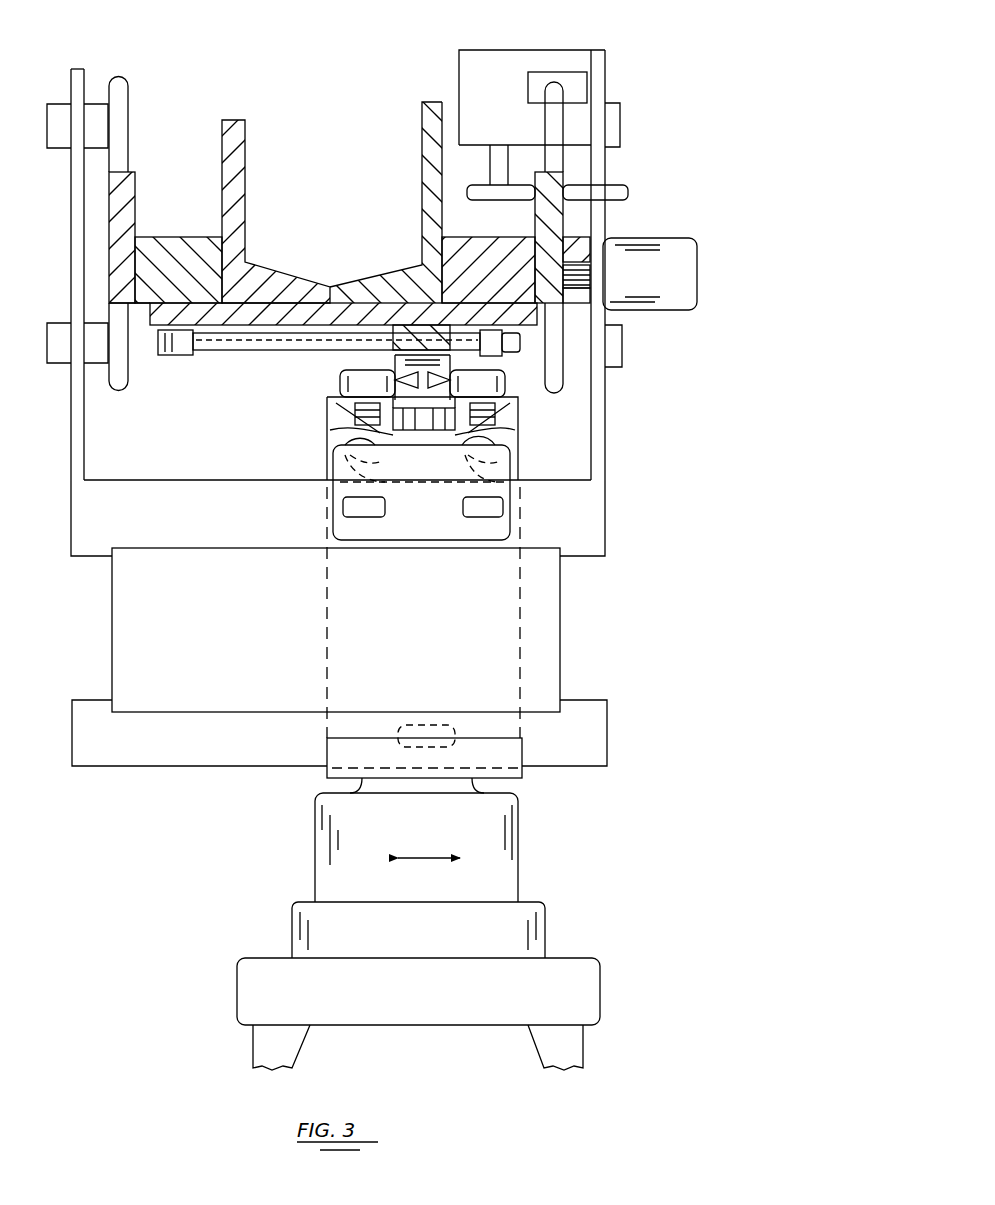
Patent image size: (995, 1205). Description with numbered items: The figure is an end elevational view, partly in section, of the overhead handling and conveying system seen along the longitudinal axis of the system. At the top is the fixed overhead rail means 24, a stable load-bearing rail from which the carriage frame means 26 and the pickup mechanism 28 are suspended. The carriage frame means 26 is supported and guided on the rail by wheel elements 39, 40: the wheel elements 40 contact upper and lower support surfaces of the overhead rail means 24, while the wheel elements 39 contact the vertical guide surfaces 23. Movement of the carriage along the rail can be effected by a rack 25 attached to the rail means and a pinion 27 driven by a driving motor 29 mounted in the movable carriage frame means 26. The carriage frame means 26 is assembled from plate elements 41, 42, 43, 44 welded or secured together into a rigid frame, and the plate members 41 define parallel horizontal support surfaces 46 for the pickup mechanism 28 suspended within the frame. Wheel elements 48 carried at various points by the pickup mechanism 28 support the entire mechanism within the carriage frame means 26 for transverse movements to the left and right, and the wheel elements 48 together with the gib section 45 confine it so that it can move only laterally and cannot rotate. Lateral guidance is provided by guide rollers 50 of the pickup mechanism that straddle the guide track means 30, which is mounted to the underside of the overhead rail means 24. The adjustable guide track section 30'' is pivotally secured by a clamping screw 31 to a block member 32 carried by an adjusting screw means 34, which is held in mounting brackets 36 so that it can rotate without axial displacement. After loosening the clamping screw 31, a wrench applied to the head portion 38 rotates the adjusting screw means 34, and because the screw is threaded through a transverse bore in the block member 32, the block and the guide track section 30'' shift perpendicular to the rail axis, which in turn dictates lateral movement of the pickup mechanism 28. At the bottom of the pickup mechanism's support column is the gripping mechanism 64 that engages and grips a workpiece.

The vertical guide surfaces 23 is at (560, 182).
The overhead rail means 24 is at (399, 101).
The rack 25 is at (582, 241).
The carriage frame means 26 is at (375, 622).
The pinion 27 is at (588, 285).
The pickup mechanism 28 is at (536, 772).
The driving motor 29 is at (668, 285).
The guide track means 30 is at (441, 388).
The guide track section 30'' is at (454, 438).
The clamping screw 31 is at (443, 425).
The block member 32 is at (388, 352).
The adjusting screw means 34 is at (252, 352).
The mounting brackets 36 is at (182, 357).
The head portion 38 is at (500, 385).
The wheel elements 39 is at (483, 192).
The wheel elements 40 is at (120, 103).
The plate members 41 is at (576, 533).
The plate element 42 is at (560, 662).
The plate element 43 is at (585, 754).
The plate element 44 is at (78, 418).
The gib section 45 is at (343, 750).
The support surfaces 46 is at (212, 478).
The wheel elements 48 is at (352, 442).
The guide rollers 50 is at (382, 380).
The gripping mechanism 64 is at (587, 998).